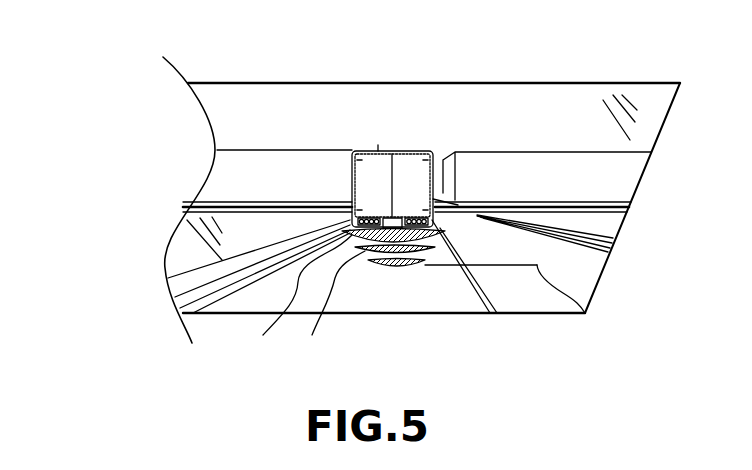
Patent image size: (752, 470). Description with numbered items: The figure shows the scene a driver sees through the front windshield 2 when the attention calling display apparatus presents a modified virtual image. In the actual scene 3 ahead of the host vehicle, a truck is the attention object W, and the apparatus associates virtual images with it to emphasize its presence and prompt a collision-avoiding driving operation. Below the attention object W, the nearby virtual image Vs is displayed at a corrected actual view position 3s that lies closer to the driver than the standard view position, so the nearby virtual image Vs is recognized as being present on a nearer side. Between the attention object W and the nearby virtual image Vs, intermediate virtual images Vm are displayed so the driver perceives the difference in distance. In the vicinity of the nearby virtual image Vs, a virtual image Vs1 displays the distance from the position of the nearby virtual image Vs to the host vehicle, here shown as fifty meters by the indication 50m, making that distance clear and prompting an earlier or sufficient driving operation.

The front windshield 2 is at (272, 127).
The actual scene 3 is at (514, 109).
The corrected actual view position 3s is at (584, 315).
The attention object W is at (433, 152).
The intermediate virtual image Vm is at (304, 301).
The nearby virtual image Vs is at (368, 265).
The distance virtual image Vs1 is at (437, 270).
The distance indication 50m is at (476, 279).